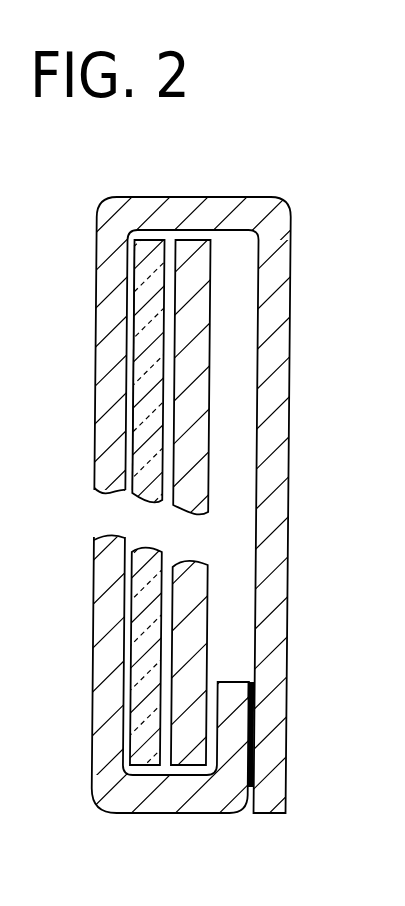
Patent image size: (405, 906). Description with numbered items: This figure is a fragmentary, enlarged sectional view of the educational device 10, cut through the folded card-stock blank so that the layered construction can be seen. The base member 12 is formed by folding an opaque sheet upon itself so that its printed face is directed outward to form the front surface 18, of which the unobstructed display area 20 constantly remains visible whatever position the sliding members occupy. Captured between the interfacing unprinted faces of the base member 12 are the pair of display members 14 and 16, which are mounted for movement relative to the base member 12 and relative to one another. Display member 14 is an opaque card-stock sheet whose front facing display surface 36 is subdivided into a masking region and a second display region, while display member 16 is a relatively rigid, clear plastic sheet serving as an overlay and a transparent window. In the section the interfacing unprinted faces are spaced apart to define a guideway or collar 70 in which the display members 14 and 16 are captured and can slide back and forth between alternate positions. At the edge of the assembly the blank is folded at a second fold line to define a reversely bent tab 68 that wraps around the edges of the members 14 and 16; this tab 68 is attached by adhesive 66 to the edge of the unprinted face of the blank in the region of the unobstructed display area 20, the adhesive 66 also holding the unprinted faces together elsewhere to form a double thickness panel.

The educational device 10 is at (272, 162).
The base member 12 is at (277, 317).
The display member 14 is at (202, 627).
The display member 16 is at (140, 625).
The front surface 18 is at (93, 695).
The unobstructed display area 20 is at (96, 380).
The front facing display surface 36 is at (165, 428).
The adhesive 66 is at (253, 745).
The reversely bent tab 68 is at (228, 698).
The guideway or collar 70 is at (126, 305).